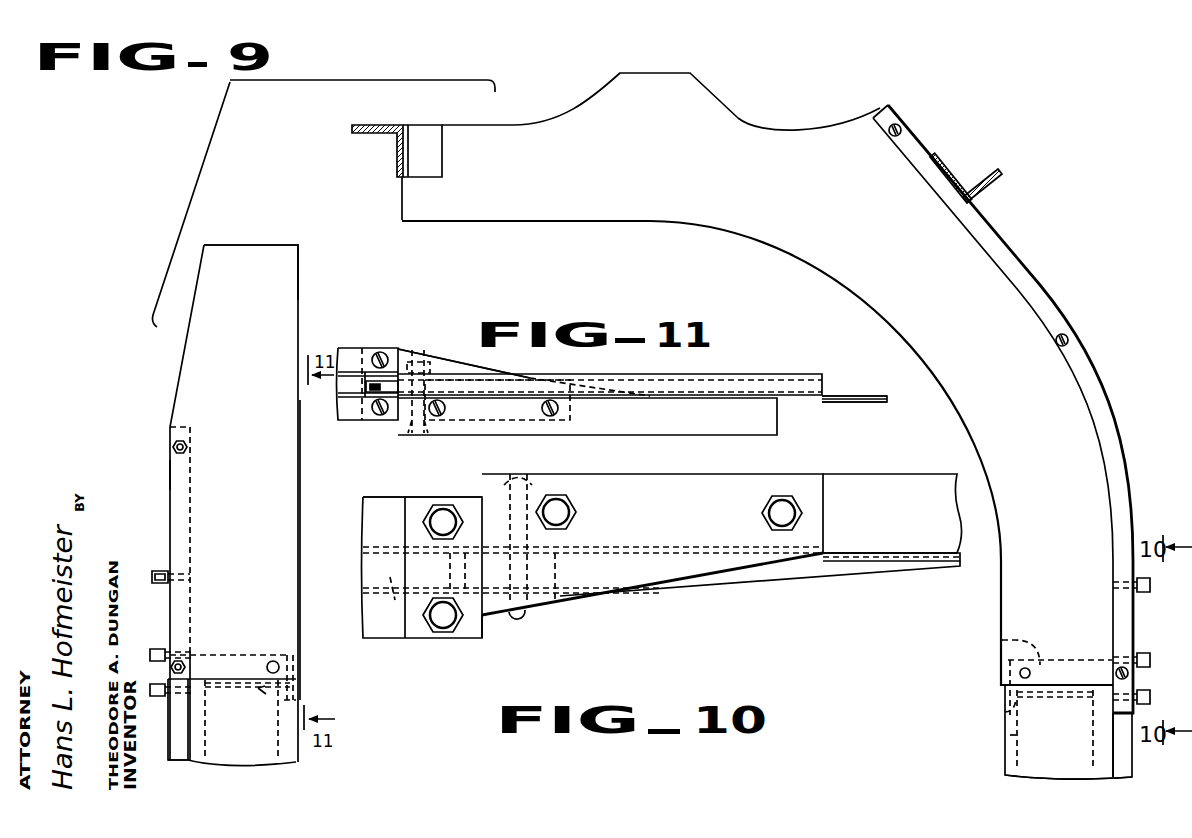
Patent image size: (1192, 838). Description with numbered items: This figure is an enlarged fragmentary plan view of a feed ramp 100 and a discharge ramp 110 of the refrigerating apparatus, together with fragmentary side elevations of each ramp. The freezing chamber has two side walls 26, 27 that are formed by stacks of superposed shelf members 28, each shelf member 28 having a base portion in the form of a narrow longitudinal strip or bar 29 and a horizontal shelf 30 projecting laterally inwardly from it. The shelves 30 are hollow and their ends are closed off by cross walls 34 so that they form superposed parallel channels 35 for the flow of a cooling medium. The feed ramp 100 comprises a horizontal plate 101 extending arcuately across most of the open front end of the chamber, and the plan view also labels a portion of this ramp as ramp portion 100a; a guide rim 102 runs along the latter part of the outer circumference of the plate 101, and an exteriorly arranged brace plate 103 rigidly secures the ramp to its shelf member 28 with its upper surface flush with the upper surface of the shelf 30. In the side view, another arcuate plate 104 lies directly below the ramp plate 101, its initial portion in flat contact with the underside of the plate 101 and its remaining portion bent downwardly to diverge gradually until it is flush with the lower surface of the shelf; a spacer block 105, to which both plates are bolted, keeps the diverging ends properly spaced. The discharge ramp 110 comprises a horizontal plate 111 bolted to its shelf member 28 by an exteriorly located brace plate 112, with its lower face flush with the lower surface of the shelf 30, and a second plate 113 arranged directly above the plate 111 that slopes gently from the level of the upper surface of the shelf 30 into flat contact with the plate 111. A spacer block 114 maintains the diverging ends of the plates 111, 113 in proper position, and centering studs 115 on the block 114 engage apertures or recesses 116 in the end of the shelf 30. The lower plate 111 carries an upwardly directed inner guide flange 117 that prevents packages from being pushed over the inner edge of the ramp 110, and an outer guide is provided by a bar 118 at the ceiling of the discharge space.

In FIG. 11, the side wall 26 is at (350, 356).
In FIG. 10, the side wall 27 is at (386, 532).
In FIG. 9, the shelf member 28 is at (236, 745).
In FIG. 11, the shelf member 28 is at (353, 415).
In FIG. 10, the shelf member 28 is at (386, 520).
In FIG. 9, the longitudinal strip or bar 29 is at (179, 757).
In FIG. 9, the horizontal shelf 30 is at (297, 766).
In FIG. 11, the horizontal shelf 30 is at (346, 388).
In FIG. 10, the horizontal shelf 30 is at (380, 546).
In FIG. 9, the cross wall 34 is at (300, 697).
In FIG. 10, the cross wall 34 is at (458, 578).
In FIG. 9, the channel 35 is at (297, 749).
In FIG. 10, the channel 35 is at (395, 600).
In FIG. 9, the feed ramp 100 is at (748, 126).
In FIG. 10, the feed ramp 100 is at (872, 548).
In FIG. 9, the raised portion of panel 100a is at (652, 93).
In FIG. 9, the horizontal plate 101 is at (710, 217).
In FIG. 10, the horizontal plate 101 is at (912, 572).
In FIG. 9, the guide rim 102 is at (978, 225).
In FIG. 10, the guide rim 102 is at (865, 491).
In FIG. 9, the brace plate 103 is at (1135, 618).
In FIG. 10, the brace plate 103 is at (658, 484).
In FIG. 10, the arcuate plate 104 is at (838, 572).
In FIG. 9, the spacer block 105 is at (1001, 641).
In FIG. 10, the spacer block 105 is at (550, 580).
In FIG. 9, the discharge ramp 110 is at (242, 266).
In FIG. 11, the discharge ramp 110 is at (855, 395).
In FIG. 11, the horizontal plate 111 is at (862, 403).
In FIG. 9, the brace plate 112 is at (166, 607).
In FIG. 11, the brace plate 112 is at (450, 361).
In FIG. 9, the second plate 113 is at (283, 268).
In FIG. 11, the second plate 113 is at (830, 396).
In FIG. 9, the spacer block 114 is at (297, 647).
In FIG. 11, the spacer block 114 is at (425, 364).
In FIG. 9, the centering stud 115 is at (300, 681).
In FIG. 11, the centering stud 115 is at (394, 384).
In FIG. 9, the aperture or recess 116 is at (297, 693).
In FIG. 11, the aperture or recess 116 is at (370, 384).
In FIG. 9, the inner guide flange 117 is at (302, 475).
In FIG. 11, the inner guide flange 117 is at (750, 378).
In FIG. 9, the bar 118 is at (170, 478).
In FIG. 11, the bar 118 is at (612, 436).